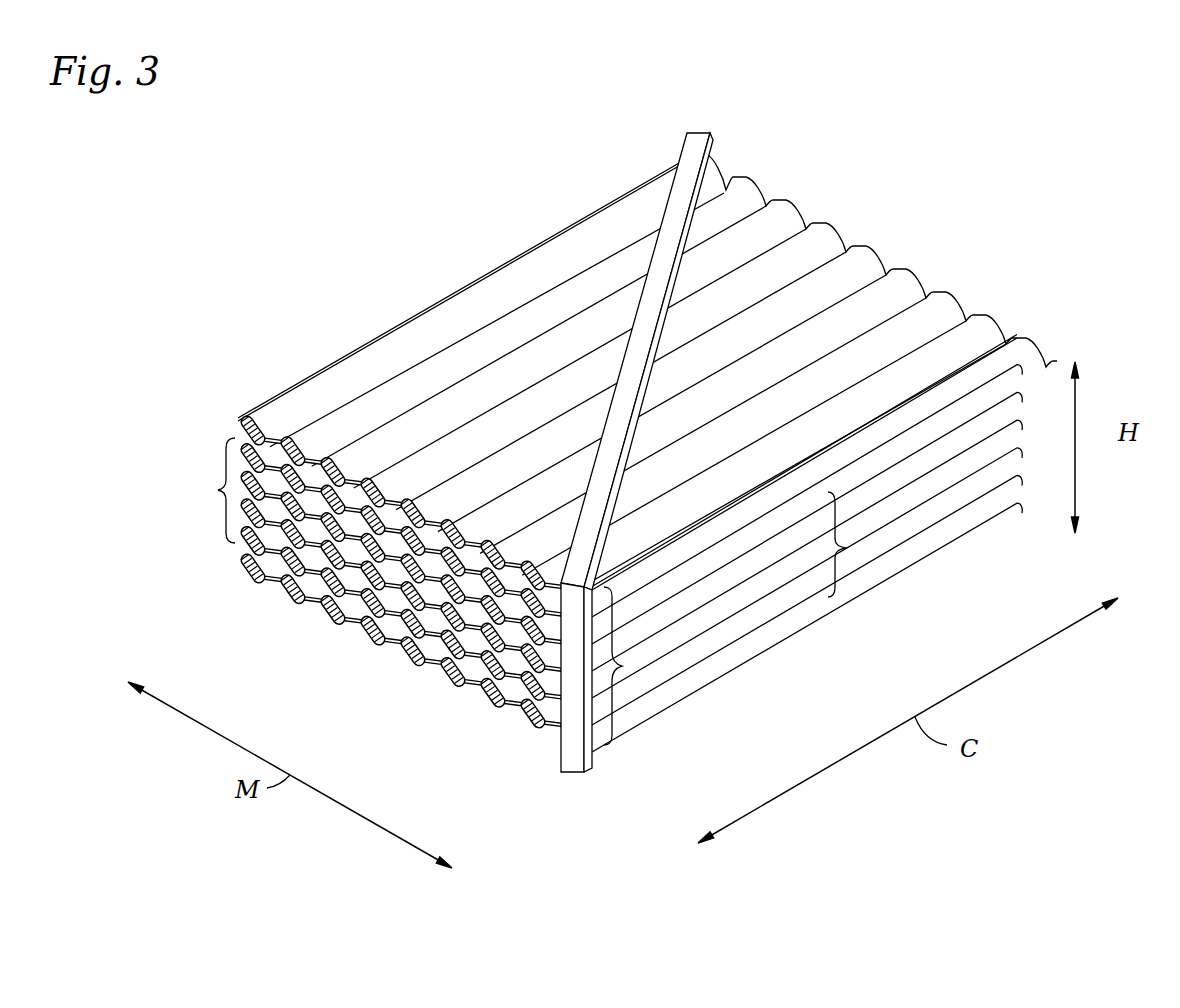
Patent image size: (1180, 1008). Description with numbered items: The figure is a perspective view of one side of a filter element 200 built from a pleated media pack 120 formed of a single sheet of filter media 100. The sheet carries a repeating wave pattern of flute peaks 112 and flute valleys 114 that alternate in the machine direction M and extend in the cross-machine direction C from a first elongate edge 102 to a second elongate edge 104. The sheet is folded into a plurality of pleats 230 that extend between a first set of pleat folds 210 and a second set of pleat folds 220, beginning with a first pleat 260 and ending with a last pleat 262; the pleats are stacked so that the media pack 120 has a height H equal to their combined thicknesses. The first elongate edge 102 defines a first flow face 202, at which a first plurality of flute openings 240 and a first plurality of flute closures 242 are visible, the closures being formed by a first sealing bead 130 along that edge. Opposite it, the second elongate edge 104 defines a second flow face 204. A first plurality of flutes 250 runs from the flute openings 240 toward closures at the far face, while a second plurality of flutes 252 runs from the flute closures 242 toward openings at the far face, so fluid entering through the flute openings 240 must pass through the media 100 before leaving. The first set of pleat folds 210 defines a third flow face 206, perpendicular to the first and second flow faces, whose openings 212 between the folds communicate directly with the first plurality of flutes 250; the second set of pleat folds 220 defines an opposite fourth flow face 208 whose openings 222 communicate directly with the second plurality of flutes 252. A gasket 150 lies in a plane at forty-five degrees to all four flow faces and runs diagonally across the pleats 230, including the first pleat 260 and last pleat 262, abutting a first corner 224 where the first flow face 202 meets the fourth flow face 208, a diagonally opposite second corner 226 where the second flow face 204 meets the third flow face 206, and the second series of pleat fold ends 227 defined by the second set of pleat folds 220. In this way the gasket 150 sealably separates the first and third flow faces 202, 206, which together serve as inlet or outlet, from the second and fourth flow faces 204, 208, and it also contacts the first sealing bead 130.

The sheet of filter media 100 is at (973, 330).
The first elongate edge 102 is at (393, 632).
The second elongate edge 104 is at (868, 250).
The flute peaks 112 is at (296, 445).
The flute valleys 114 is at (326, 460).
The media pack 120 is at (537, 225).
The first sealing bead 130 is at (532, 700).
The gasket 150 is at (678, 432).
The filter element 200 is at (517, 132).
The first flow face 202 is at (286, 648).
The second flow face 204 is at (881, 260).
The third flow face 206 is at (461, 248).
The fourth flow face 208 is at (820, 583).
The first set of pleat folds 210 is at (203, 490).
The openings 212 is at (238, 552).
The second set of pleat folds 220 is at (847, 548).
The openings 222 is at (733, 628).
The first corner 224 is at (596, 755).
The second corner 226 is at (714, 160).
The second series of pleat fold ends 227 is at (622, 668).
The plurality of pleats 230 is at (283, 585).
The first plurality of flute openings 240 is at (398, 645).
The first plurality of flute closures 242 is at (458, 665).
The first plurality of flutes 250 is at (420, 505).
The second plurality of flutes 252 is at (520, 547).
The first pleat 260 is at (267, 415).
The last pleat 262 is at (530, 748).